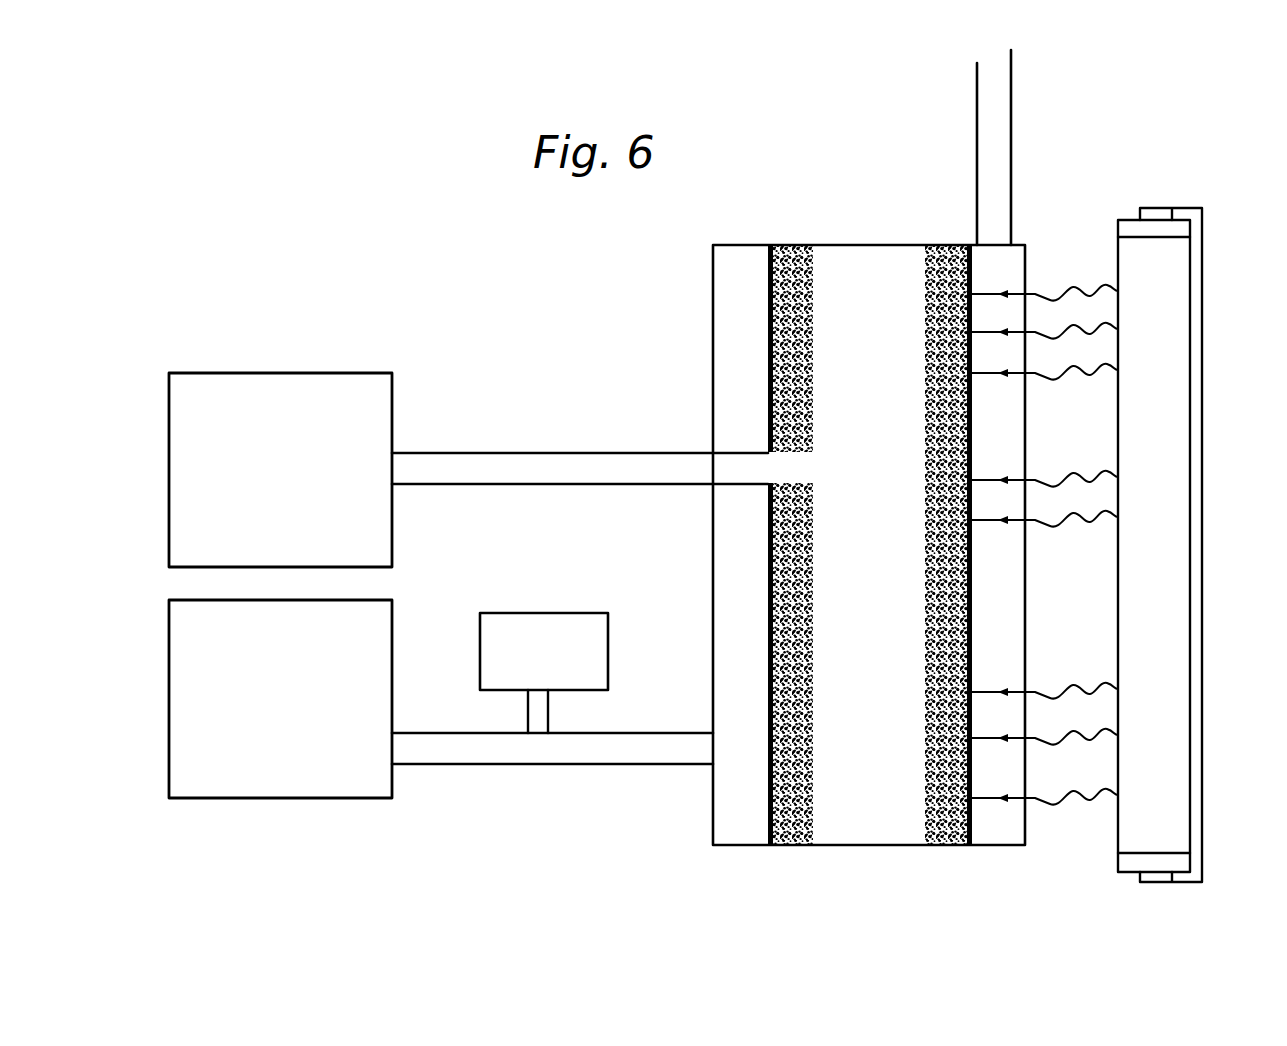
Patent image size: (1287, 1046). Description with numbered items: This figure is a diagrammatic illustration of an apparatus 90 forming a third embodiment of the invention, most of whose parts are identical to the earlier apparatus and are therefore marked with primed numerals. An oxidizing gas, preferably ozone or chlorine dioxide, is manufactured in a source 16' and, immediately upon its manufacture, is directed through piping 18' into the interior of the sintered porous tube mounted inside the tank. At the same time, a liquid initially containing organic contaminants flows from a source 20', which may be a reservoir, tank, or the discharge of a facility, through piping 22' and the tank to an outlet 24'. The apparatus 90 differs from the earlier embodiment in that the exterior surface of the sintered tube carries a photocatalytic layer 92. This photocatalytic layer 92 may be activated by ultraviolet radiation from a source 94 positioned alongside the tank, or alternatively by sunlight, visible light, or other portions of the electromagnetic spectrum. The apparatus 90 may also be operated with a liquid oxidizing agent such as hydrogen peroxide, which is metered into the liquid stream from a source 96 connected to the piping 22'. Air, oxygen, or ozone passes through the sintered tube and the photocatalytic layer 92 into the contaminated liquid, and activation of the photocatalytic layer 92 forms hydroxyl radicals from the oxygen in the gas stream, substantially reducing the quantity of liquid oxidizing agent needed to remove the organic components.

The apparatus 90 is at (447, 248).
The source 16' is at (280, 443).
The piping 18' is at (580, 433).
The source 20' is at (280, 726).
The piping 22' is at (552, 780).
The outlet 24' is at (1068, 147).
The photocatalytic layer 92 is at (1005, 647).
The source 94 is at (1223, 356).
The source 96 is at (550, 613).